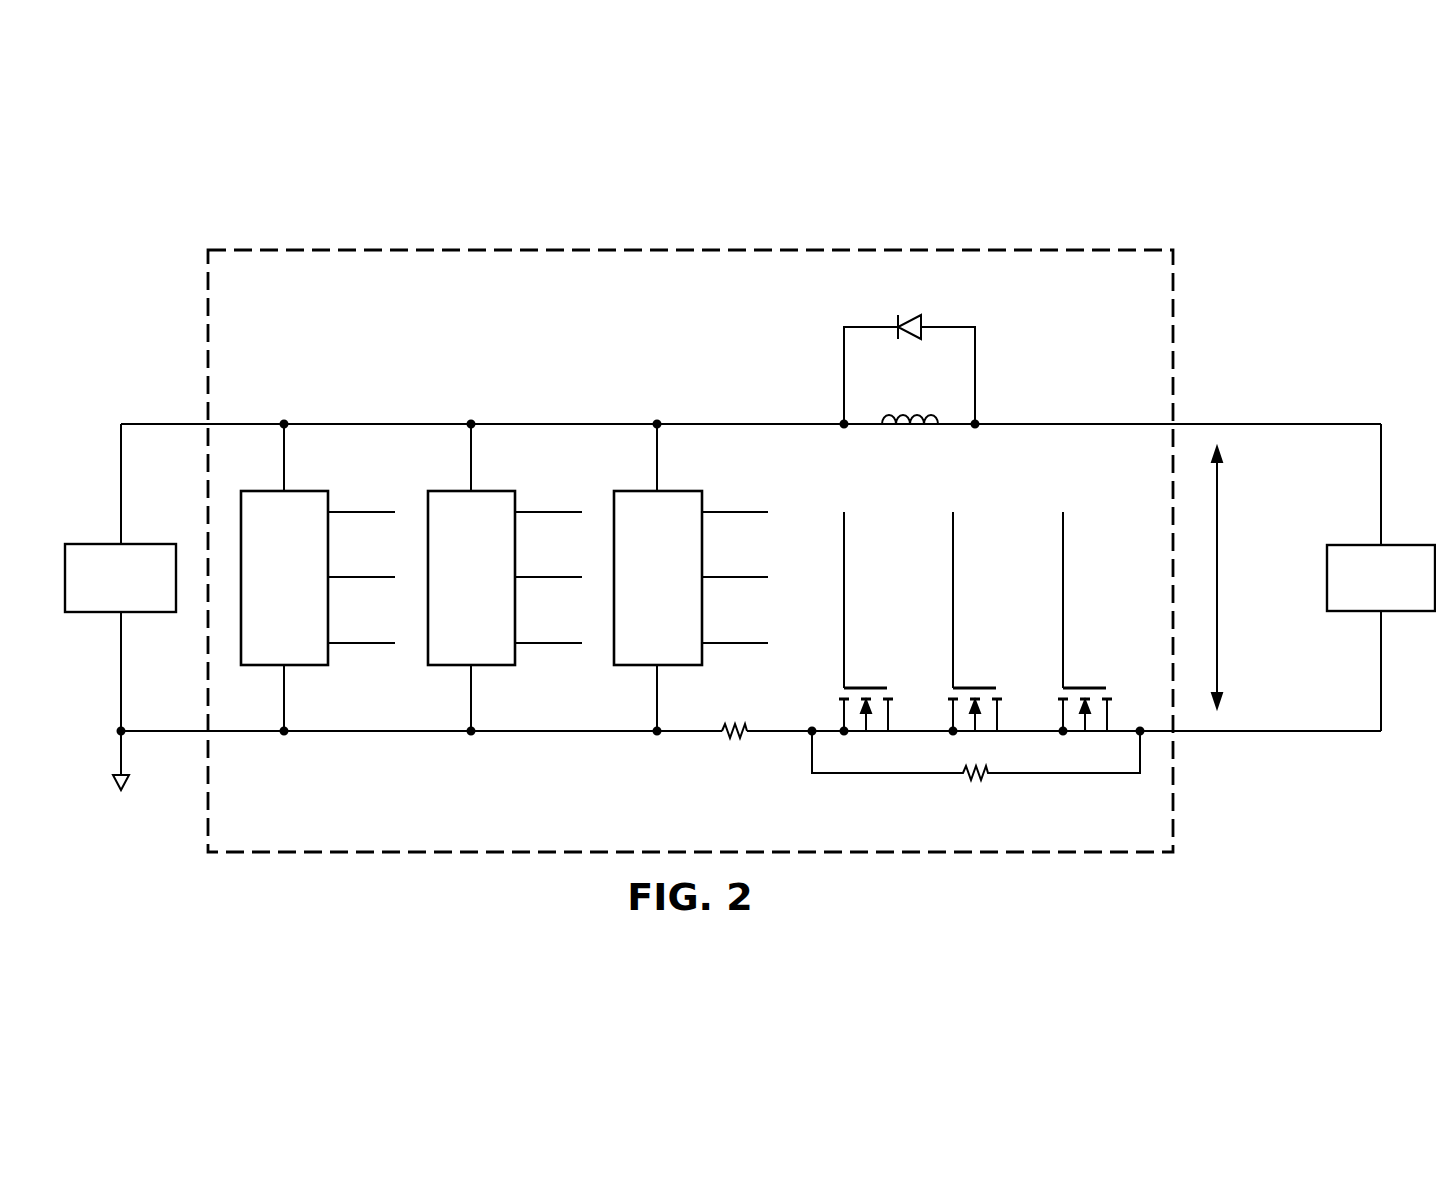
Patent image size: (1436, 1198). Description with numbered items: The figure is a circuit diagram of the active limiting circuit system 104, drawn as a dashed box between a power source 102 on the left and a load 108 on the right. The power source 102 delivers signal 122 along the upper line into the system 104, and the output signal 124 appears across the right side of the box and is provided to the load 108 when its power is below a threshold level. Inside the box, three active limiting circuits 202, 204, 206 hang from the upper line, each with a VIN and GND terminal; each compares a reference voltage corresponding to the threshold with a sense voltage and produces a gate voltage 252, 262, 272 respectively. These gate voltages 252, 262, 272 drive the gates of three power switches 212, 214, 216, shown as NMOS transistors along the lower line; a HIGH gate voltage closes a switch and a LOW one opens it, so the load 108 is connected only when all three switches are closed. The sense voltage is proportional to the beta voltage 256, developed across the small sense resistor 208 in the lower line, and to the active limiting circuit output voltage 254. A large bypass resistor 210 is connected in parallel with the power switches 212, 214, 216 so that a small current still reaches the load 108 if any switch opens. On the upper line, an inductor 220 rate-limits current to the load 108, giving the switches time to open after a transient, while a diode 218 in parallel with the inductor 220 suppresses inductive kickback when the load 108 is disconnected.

The power source 102 is at (100, 614).
The active limiting circuit system 104 is at (506, 349).
The load 108 is at (1402, 612).
The signal 122 is at (166, 424).
The signal 124 is at (1245, 574).
The active limiting circuit 202 is at (264, 490).
The active limiting circuit 204 is at (451, 490).
The active limiting circuit 206 is at (637, 490).
The sense resistor 208 is at (731, 736).
The bypass resistor 210 is at (982, 780).
The power switch 212 is at (876, 686).
The power switch 214 is at (985, 686).
The power switch 216 is at (1095, 686).
The diode 218 is at (906, 320).
The inductor 220 is at (908, 414).
The gate voltage 252 is at (363, 512).
The active limiting circuit output voltage 254 is at (363, 577).
The beta voltage 256 is at (362, 645).
The gate voltage 262 is at (550, 512).
The gate voltage 272 is at (736, 512).